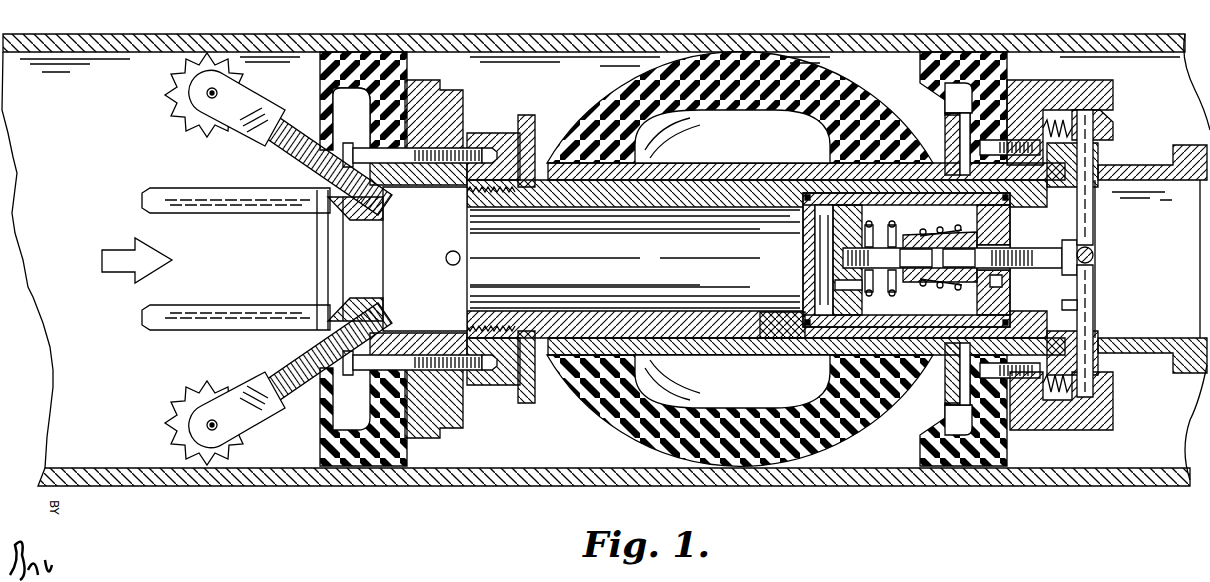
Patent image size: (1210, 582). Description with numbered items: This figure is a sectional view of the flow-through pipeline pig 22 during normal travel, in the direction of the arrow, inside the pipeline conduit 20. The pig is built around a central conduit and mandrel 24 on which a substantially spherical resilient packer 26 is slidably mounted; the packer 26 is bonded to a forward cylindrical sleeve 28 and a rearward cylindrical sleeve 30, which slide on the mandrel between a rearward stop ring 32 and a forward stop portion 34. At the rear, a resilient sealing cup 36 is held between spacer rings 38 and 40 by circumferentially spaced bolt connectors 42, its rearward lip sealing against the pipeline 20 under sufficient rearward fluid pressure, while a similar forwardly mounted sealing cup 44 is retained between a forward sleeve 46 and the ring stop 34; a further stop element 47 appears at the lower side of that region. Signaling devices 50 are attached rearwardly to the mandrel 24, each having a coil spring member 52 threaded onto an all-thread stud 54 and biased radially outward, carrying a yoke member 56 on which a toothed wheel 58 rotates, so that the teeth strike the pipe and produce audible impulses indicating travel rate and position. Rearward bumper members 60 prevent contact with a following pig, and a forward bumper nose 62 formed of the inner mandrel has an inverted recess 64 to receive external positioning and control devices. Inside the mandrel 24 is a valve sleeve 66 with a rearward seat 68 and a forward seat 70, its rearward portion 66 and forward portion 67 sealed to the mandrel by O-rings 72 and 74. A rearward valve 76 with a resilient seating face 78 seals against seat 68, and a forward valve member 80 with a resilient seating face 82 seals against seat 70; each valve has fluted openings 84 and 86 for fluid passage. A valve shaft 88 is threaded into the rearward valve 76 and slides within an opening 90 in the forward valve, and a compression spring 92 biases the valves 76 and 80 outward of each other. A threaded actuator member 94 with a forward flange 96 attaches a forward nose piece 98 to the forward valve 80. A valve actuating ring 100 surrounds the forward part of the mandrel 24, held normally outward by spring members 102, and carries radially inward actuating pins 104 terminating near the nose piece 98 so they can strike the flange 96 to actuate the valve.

The pipeline conduit 20 is at (400, 486).
The pig 22 is at (527, 438).
The central conduit and mandrel 24 is at (715, 338).
The spherical resilient packer 26 is at (738, 110).
The forward cylindrical sleeve 28 is at (820, 160).
The rearward cylindrical sleeve 30 is at (640, 165).
The rearward stop ring 32 is at (500, 128).
The forward stop portion 34 is at (970, 113).
The sealing cup 36 is at (355, 62).
The spacer ring 38 is at (443, 82).
The spacer ring 40 is at (337, 110).
The bolt connectors 42 is at (347, 147).
The forwardly mounted sealing cup 44 is at (957, 62).
The forward sleeve 46 is at (1062, 82).
The lower spacer bar 47 is at (965, 368).
The signaling devices 50 is at (148, 89).
The coil spring member 52 is at (293, 157).
The all-thread studs 54 is at (350, 210).
The yoke member 56 is at (230, 132).
The toothed wheel 58 is at (173, 115).
The bumper members 60 is at (177, 188).
The forward bumper nose 62 is at (1151, 226).
The inverted recess 64 is at (1160, 165).
The valve sleeve 66 is at (790, 337).
The forward portion 67 is at (1000, 280).
The rearward seat 68 is at (818, 240).
The forward seat 70 is at (985, 232).
The O-ring 72 is at (820, 322).
The O-ring 74 is at (990, 215).
The rearward valve 76 is at (835, 258).
The resilient seating face 78 is at (835, 283).
The forward valve member 80 is at (905, 297).
The resilient seating face 82 is at (965, 224).
The fluted openings 84 is at (850, 292).
The fluted openings 86 is at (985, 295).
The valve shaft 88 is at (890, 258).
The opening 90 is at (952, 257).
The spring 92 is at (885, 240).
The threaded actuator member 94 is at (1076, 255).
The forward flange 96 is at (1073, 284).
The forward nose piece 98 is at (1094, 256).
The valve actuating ring 100 is at (1112, 112).
The spring members 102 is at (1065, 118).
The actuating pins 104 is at (1093, 226).